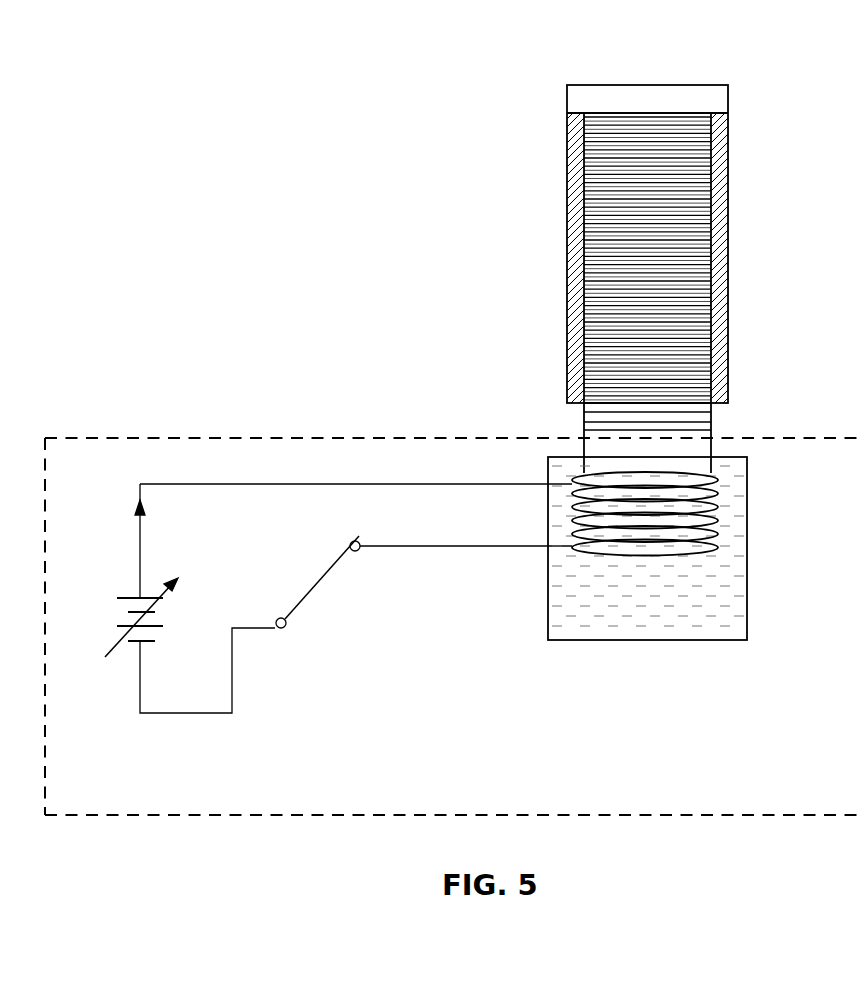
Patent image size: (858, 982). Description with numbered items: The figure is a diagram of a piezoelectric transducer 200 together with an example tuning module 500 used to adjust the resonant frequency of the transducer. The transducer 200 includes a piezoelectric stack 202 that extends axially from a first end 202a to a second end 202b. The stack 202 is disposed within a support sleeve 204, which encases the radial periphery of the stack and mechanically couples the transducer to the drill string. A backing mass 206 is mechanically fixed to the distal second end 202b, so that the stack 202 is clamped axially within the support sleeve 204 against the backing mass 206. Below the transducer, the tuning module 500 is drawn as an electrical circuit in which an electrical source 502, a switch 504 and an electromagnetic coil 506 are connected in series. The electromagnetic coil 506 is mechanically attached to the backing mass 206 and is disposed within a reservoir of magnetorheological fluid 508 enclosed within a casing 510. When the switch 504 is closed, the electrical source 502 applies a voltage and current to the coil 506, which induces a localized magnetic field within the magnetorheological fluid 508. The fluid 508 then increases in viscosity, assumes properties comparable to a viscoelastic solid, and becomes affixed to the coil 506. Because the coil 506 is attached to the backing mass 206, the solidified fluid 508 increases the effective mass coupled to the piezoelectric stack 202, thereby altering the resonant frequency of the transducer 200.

The piezoelectric transducer 200 is at (500, 103).
The piezoelectric stack 202 is at (602, 193).
The first end 202a is at (682, 112).
The second end 202b is at (615, 403).
The support sleeve 204 is at (720, 265).
The backing mass 206 is at (682, 457).
The tuning module 500 is at (128, 409).
The electrical source 502 is at (117, 647).
The switch 504 is at (313, 588).
The electromagnetic coil 506 is at (717, 532).
The magnetorheological fluid 508 is at (602, 618).
The casing 510 is at (708, 642).